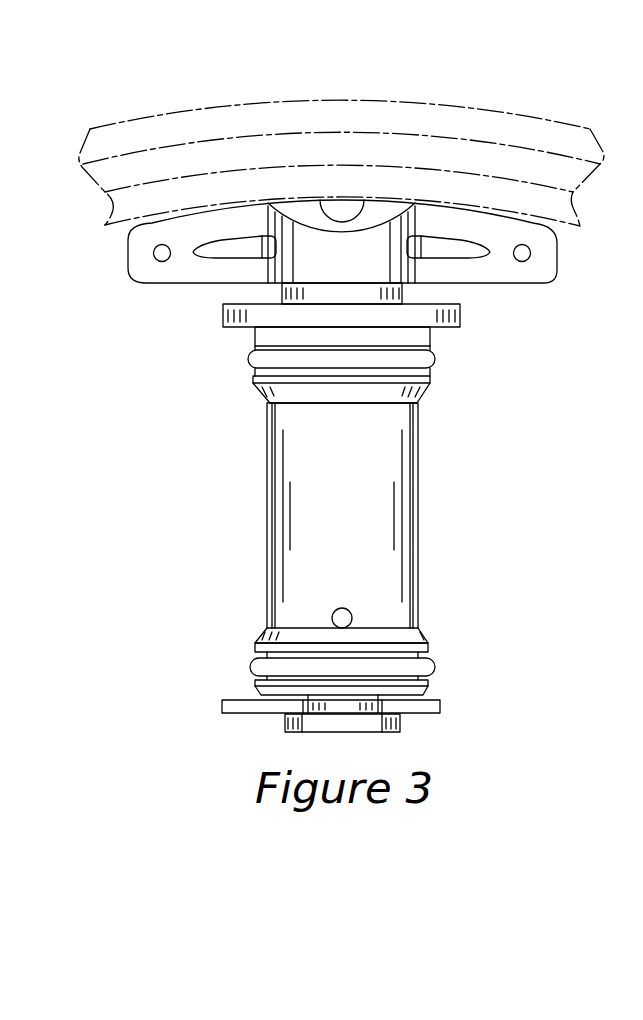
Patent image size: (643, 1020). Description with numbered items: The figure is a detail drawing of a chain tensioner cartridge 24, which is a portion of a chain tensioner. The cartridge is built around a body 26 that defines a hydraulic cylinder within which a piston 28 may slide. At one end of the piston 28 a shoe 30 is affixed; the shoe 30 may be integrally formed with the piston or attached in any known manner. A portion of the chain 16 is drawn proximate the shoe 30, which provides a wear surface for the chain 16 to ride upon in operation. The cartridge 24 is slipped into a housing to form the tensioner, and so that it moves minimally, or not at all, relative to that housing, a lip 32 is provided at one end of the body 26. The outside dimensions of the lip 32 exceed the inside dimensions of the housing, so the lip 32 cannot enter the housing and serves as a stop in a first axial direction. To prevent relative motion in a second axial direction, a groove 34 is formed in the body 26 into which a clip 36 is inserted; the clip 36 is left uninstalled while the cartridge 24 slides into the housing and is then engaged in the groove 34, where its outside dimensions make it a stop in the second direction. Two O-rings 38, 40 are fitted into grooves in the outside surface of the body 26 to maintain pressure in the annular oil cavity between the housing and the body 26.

The chain 16 is at (152, 130).
The chain tensioner cartridge 24 is at (262, 518).
The body 26 is at (410, 568).
The piston 28 is at (285, 293).
The shoe 30 is at (493, 275).
The lip 32 is at (446, 317).
The groove 34 is at (303, 710).
The clip 36 is at (228, 708).
The O-ring 38 is at (250, 360).
The O-ring 40 is at (253, 670).